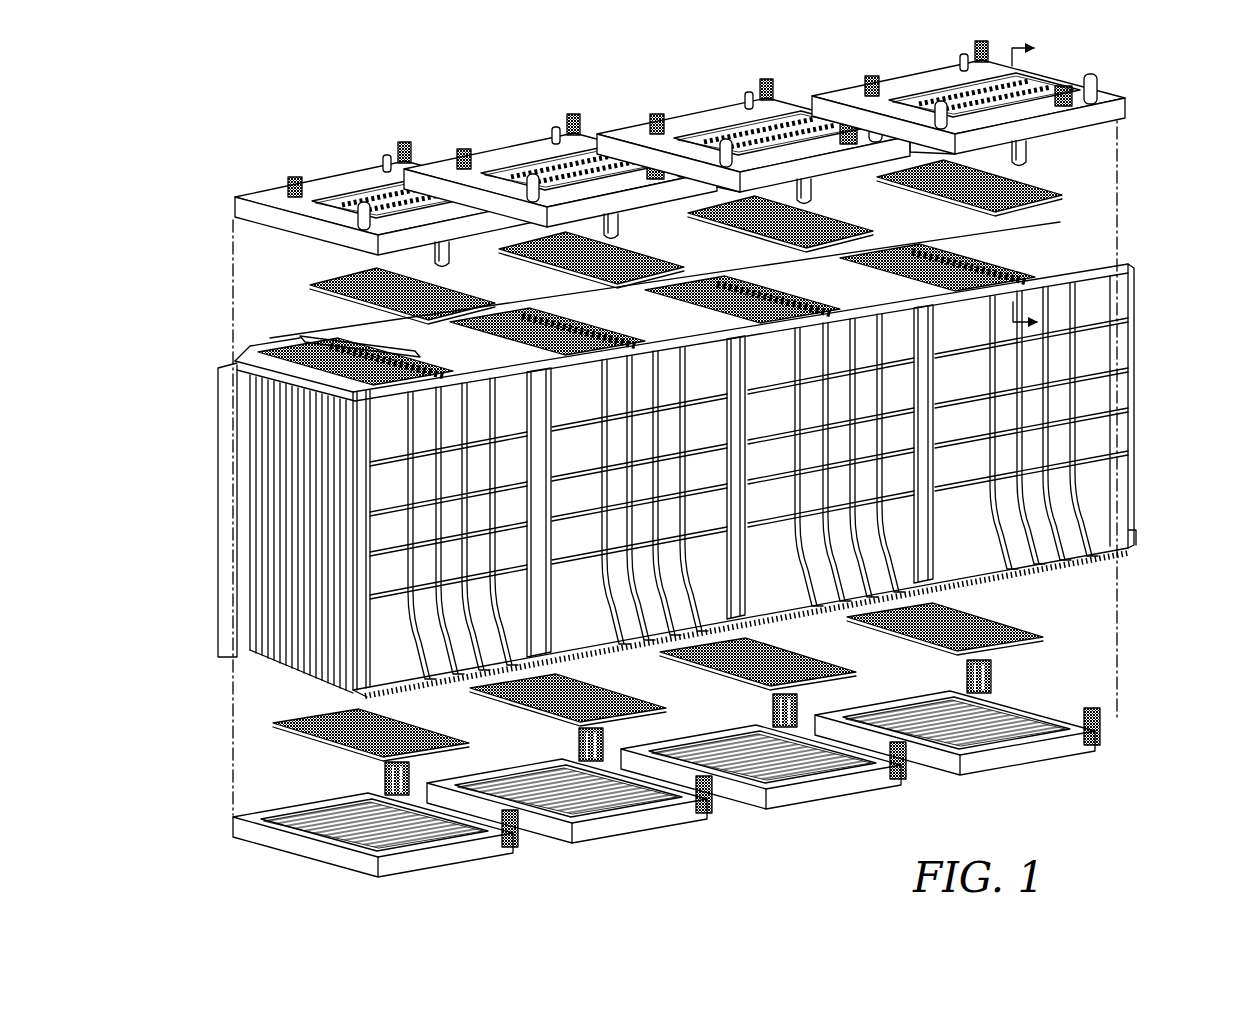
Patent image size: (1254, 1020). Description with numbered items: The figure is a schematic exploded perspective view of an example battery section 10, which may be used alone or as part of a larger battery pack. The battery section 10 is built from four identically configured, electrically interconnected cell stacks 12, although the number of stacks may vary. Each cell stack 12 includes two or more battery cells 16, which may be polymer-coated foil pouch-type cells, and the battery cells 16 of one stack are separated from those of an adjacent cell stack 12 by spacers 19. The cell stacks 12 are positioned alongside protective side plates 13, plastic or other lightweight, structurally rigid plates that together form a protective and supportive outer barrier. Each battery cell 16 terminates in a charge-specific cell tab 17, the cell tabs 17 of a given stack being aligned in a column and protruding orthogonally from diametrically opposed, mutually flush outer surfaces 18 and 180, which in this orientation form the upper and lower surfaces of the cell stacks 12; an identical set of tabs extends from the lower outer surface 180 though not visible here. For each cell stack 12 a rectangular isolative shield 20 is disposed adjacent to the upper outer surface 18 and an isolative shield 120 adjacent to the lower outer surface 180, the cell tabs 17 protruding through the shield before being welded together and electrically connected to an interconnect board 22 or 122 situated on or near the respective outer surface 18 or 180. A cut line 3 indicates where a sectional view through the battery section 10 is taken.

The battery section 10 is at (1124, 170).
The cell stack 12 is at (345, 337).
The protective side plate 13 is at (1132, 432).
The battery cell 16 is at (478, 346).
The cell tab 17 is at (270, 330).
The outer surface 18 is at (1125, 262).
The spacer 19 is at (276, 527).
The isolative shield 20 is at (350, 283).
The interconnect board 22 is at (254, 184).
The isolative shield 120 is at (330, 740).
The interconnect board 122 is at (1034, 771).
The outer surface 180 is at (1100, 553).
The cut line 3 is at (1036, 186).